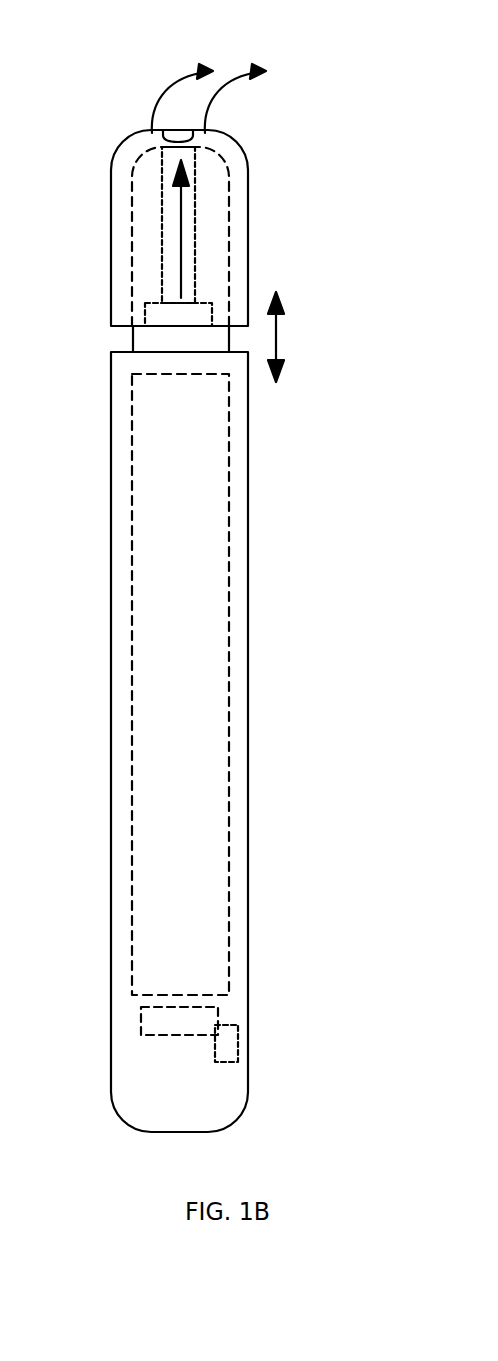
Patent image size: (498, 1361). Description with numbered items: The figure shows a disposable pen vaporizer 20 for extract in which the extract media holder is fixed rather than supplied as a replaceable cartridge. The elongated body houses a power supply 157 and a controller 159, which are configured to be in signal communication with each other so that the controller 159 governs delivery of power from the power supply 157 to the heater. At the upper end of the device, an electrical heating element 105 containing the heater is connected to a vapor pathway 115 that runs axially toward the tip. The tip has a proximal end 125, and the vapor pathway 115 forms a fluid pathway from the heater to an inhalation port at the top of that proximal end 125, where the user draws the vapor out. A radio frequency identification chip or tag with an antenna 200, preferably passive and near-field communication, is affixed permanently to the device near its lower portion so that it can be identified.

The disposable pen vaporizer 20 is at (110, 108).
The electrical heating element 105 is at (158, 316).
The vapor pathway 115 is at (162, 203).
The proximal end 125 is at (230, 203).
The power supply 157 is at (222, 868).
The controller 159 is at (207, 1023).
The radio frequency identification chip 200 is at (227, 1048).